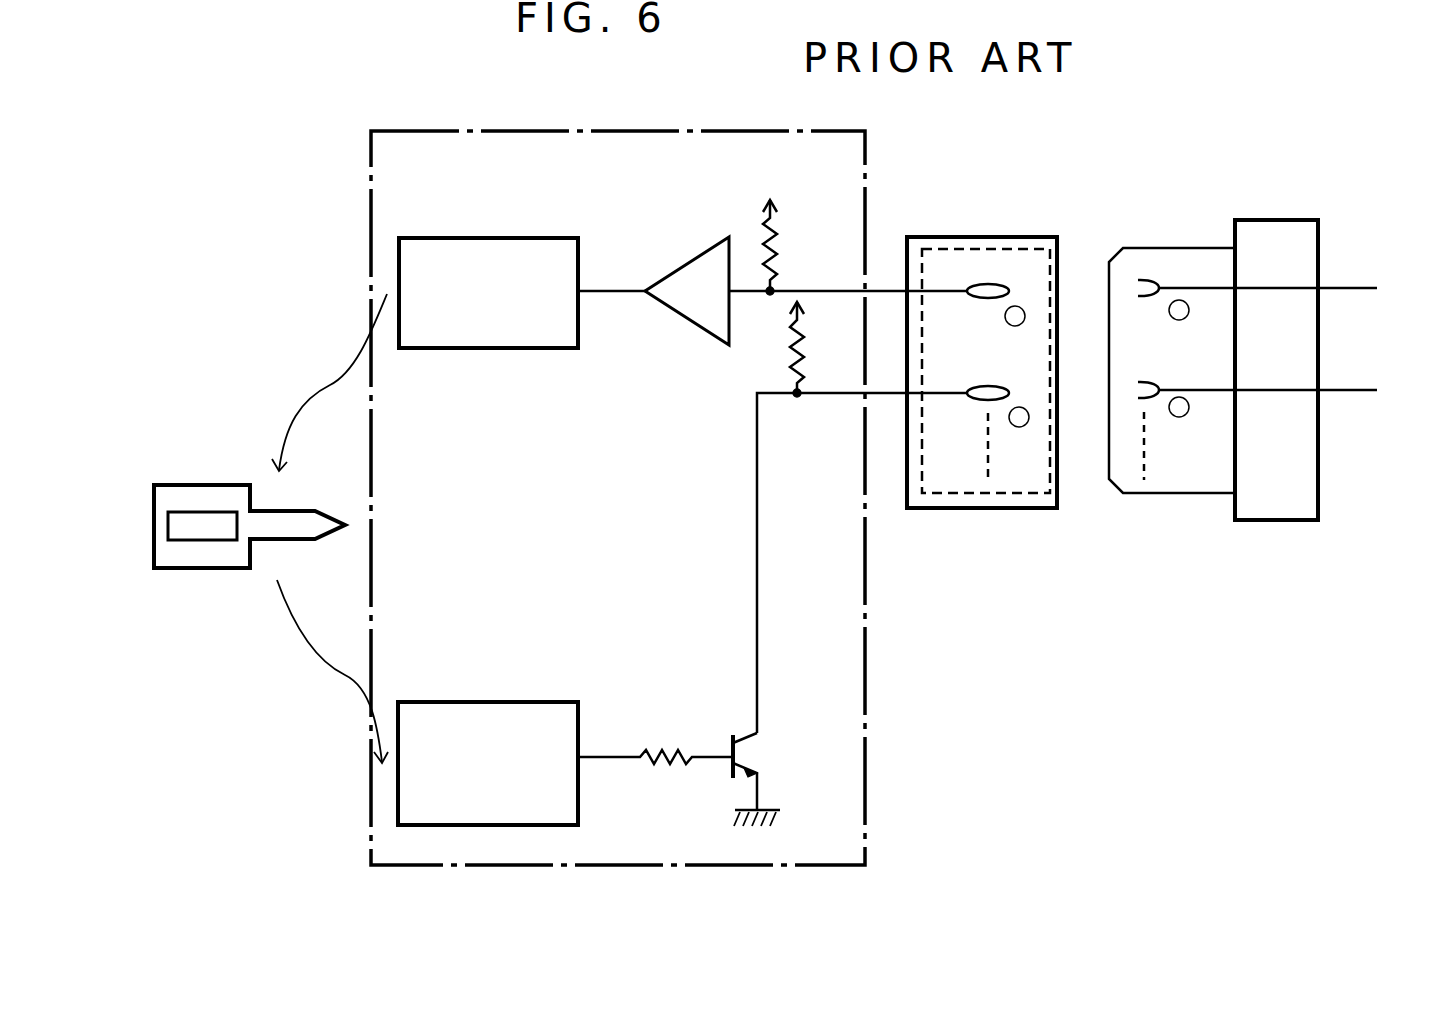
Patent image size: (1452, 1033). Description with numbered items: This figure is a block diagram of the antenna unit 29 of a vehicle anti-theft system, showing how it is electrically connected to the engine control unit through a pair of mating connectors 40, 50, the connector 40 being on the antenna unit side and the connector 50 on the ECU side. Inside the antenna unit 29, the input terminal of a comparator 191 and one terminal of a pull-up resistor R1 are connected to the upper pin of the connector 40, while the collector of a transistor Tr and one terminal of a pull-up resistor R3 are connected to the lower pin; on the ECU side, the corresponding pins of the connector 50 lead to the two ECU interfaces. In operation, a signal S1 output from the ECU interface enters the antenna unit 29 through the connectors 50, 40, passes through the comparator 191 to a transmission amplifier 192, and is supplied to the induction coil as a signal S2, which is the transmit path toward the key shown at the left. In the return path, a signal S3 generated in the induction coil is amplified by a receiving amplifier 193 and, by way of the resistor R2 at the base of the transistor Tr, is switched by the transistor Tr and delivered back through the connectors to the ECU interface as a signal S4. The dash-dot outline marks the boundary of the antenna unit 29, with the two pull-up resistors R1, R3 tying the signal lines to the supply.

The antenna unit 29 is at (541, 131).
The transmission amplifier 192 is at (488, 238).
The comparator 191 is at (683, 269).
The receiving amplifier 193 is at (536, 669).
The connector 40 is at (982, 337).
The connector 50 is at (1273, 332).
The pull-up resistor R1 is at (795, 245).
The resistor R2 is at (655, 743).
The pull-up resistor R3 is at (822, 349).
The transistor Tr is at (763, 779).
The signal S1 is at (885, 289).
The signal S2 is at (303, 387).
The signal S3 is at (303, 677).
The signal S4 is at (757, 534).